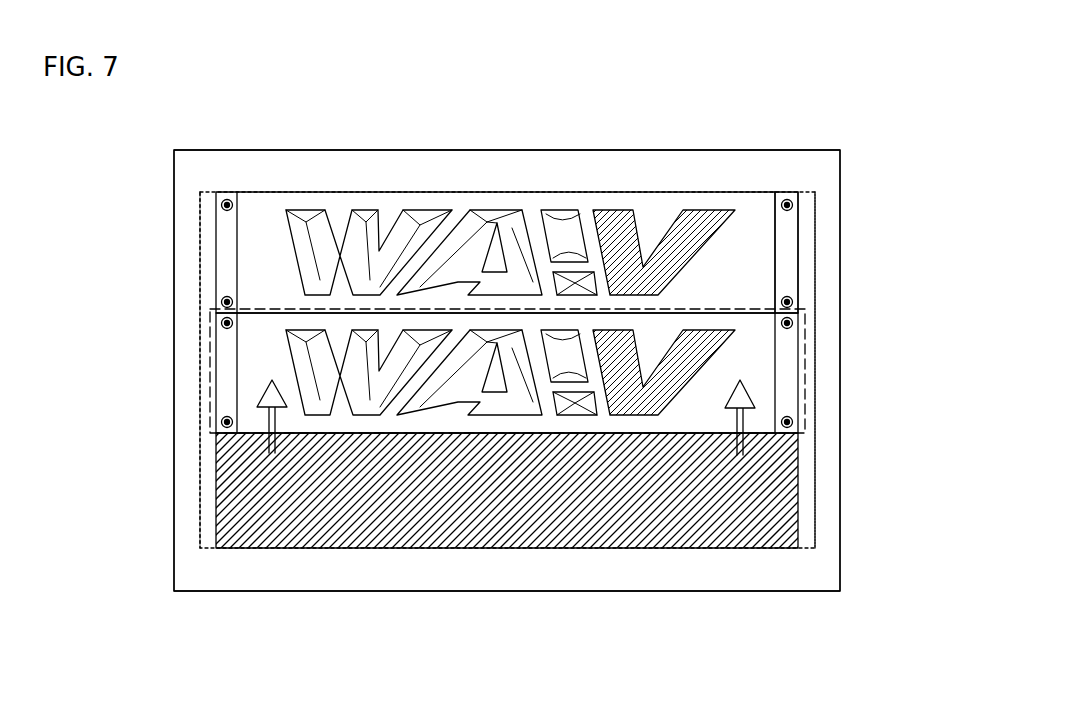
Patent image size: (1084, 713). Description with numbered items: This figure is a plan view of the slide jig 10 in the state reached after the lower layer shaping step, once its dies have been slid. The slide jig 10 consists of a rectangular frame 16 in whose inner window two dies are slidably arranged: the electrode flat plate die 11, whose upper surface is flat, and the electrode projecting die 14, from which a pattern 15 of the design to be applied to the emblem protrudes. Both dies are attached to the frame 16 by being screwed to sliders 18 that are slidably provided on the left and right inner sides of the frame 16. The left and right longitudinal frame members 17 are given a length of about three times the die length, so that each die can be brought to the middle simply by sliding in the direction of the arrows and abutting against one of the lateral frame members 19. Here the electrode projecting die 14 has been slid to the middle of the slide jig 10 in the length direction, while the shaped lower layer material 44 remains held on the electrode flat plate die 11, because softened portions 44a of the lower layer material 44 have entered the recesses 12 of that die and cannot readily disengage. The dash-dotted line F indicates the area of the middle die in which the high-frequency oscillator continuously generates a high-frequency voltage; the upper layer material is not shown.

The slide jig 10 is at (879, 170).
The electrode flat plate die 11 is at (741, 216).
The recess 12 is at (499, 205).
The portion of lower layer material 44a is at (683, 198).
The electrode projecting die 14 is at (762, 365).
The pattern 15 is at (520, 395).
The frame 16 is at (828, 548).
The longitudinal frame member 17 is at (187, 495).
The slider 18 is at (228, 362).
The lateral frame member 19 is at (389, 175).
The lower layer material 44 is at (755, 285).
The area indicated by dash-dotted line F is at (830, 309).